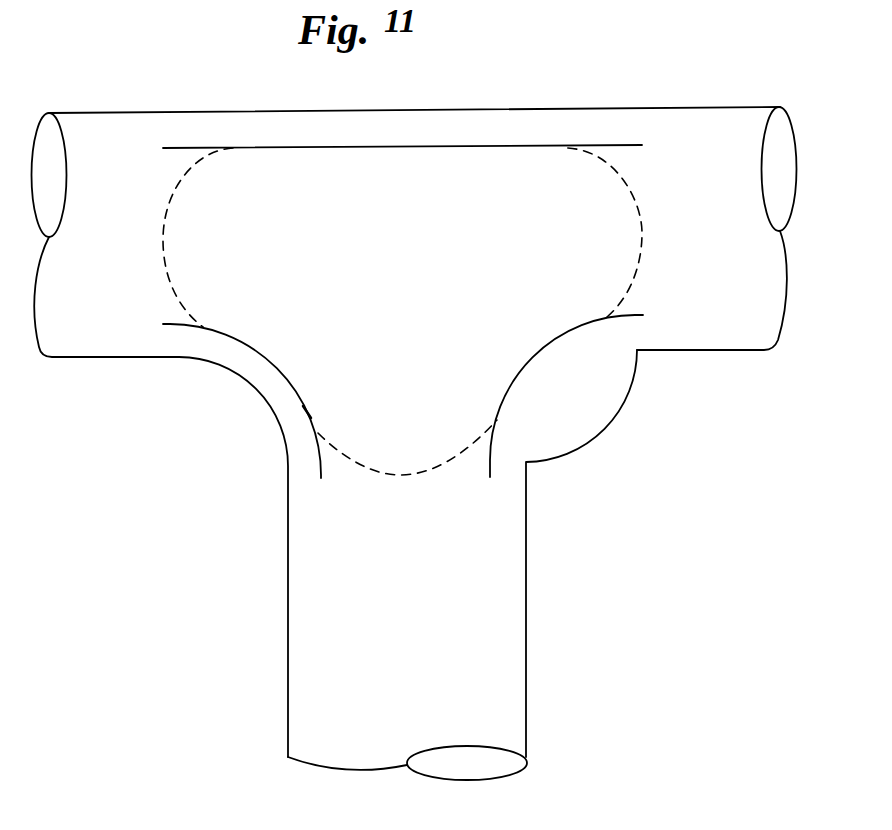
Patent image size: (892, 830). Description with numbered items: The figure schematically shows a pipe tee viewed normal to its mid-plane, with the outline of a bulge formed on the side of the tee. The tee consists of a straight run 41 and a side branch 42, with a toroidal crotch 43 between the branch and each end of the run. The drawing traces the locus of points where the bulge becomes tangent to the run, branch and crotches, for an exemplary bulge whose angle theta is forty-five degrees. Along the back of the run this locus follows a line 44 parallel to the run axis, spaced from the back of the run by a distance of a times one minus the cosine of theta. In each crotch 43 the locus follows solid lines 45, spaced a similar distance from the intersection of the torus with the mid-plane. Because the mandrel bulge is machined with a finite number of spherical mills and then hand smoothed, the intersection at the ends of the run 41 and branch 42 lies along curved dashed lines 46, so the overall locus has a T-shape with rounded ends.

The straight run 41 is at (600, 108).
The side branch 42 is at (527, 611).
The toroidal crotch 43 is at (223, 378).
The line 44 is at (435, 146).
The solid lines 45 is at (298, 403).
The dashed lines 46 is at (630, 290).